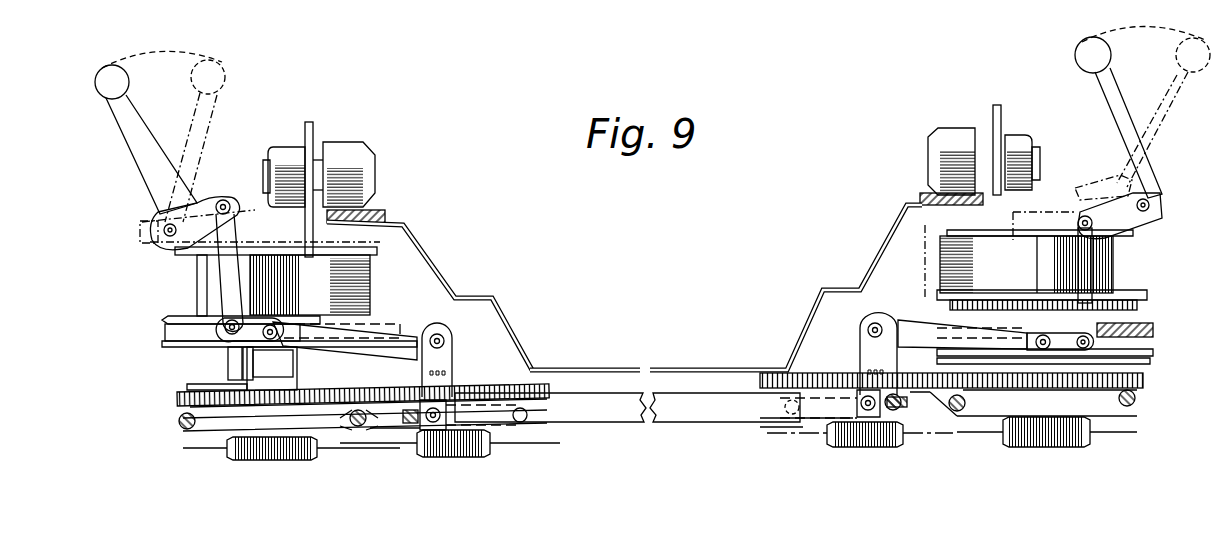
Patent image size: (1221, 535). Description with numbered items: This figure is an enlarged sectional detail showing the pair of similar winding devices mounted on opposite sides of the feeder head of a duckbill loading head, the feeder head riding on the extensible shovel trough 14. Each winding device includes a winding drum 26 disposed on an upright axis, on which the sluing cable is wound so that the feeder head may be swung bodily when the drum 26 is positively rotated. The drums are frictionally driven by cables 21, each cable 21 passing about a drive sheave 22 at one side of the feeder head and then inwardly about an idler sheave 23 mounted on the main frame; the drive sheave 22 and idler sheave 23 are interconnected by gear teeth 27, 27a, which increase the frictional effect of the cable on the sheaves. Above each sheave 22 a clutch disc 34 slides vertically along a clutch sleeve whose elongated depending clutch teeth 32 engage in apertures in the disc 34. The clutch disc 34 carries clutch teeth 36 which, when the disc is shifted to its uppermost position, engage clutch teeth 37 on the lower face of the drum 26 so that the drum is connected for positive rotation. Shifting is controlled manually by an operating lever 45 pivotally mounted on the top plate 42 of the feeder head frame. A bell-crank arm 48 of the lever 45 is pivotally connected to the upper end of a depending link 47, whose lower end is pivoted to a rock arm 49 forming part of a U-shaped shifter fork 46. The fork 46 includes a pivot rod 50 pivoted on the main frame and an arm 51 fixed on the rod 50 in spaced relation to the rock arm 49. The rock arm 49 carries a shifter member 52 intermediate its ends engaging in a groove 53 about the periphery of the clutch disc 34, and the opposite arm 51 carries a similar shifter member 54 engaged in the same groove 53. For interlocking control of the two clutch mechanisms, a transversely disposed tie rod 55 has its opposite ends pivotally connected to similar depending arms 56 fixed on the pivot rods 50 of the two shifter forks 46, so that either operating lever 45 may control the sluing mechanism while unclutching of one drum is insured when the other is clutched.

The extensible shovel trough 14 is at (490, 298).
The cable 21 is at (180, 424).
The drive sheave 22 is at (222, 448).
The idler sheave 23 is at (400, 428).
The winding drum 26 is at (207, 302).
The gear teeth 27 is at (176, 402).
The gear teeth 27a is at (520, 378).
The clutch teeth 32 is at (228, 365).
The clutch disc 34 is at (176, 350).
The clutch teeth 36 is at (1153, 330).
The clutch teeth 37 is at (1147, 297).
The top plate 42 is at (240, 222).
The operating lever 45 is at (145, 141).
The shifter fork 46 is at (438, 329).
The depending link 47 is at (222, 278).
The bell-crank arm 48 is at (208, 206).
The rock arm 49 is at (244, 325).
The pivot rod 50 is at (446, 338).
The arm 51 is at (398, 335).
The shifter member 52 is at (300, 331).
The groove 53 is at (205, 333).
The shifter member 54 is at (1028, 342).
The tie rod 55 is at (620, 420).
The depending arm 56 is at (447, 380).